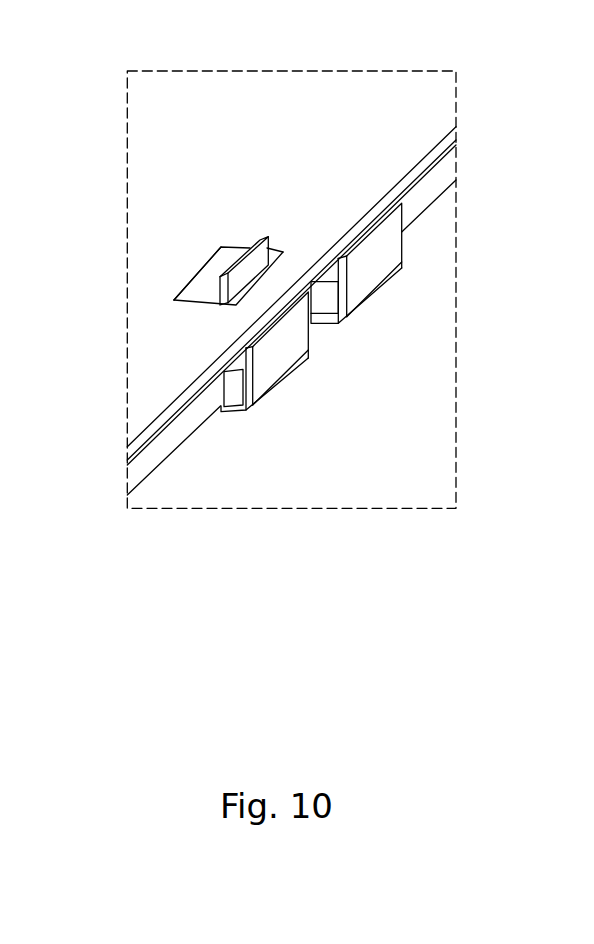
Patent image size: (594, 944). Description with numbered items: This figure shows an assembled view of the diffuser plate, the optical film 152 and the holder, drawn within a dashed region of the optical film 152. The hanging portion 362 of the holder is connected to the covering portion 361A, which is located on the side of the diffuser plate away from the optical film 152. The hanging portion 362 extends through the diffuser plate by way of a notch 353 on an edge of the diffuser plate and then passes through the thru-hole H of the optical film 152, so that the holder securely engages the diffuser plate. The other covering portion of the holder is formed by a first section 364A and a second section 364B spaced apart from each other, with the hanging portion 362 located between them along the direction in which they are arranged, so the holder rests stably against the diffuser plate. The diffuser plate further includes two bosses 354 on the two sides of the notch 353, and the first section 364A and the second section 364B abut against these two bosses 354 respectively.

The optical film 152 is at (206, 131).
The notch 353 is at (200, 298).
The thru-hole H is at (200, 273).
The hanging portion 362 is at (251, 245).
The first section 364A is at (293, 338).
The second section 364B is at (377, 250).
The bosses 354 is at (330, 297).
The covering portion 361A is at (235, 412).